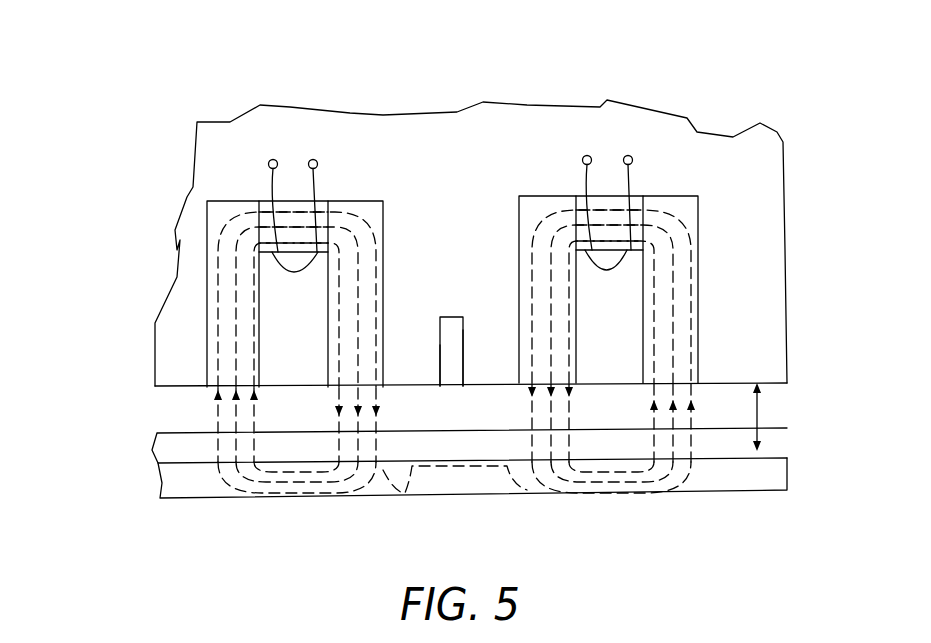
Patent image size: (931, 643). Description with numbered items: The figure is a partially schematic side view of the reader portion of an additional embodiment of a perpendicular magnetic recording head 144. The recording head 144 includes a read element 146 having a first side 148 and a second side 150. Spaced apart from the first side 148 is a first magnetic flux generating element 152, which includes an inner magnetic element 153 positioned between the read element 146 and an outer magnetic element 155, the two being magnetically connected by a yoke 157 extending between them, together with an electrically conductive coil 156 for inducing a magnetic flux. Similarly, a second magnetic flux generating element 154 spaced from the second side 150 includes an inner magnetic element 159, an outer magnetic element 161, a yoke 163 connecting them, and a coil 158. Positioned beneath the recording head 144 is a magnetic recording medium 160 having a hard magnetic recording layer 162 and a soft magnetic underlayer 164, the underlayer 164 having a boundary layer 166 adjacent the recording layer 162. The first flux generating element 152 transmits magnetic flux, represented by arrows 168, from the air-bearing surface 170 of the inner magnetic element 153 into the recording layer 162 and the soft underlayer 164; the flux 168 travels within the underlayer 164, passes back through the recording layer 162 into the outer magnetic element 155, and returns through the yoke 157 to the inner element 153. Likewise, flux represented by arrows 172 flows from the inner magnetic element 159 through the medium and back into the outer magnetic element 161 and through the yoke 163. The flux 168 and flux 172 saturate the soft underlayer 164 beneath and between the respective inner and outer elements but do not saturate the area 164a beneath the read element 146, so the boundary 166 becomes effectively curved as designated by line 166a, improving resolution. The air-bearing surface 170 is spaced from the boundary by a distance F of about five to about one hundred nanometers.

The perpendicular magnetic recording head 144 is at (273, 120).
The read element 146 is at (450, 318).
The first side 148 is at (440, 363).
The second side 150 is at (465, 332).
The first magnetic flux generating element 152 is at (278, 229).
The inner magnetic element 153 is at (377, 233).
The second magnetic flux generating element 154 is at (608, 221).
The outer magnetic element 155 is at (213, 273).
The coil 156 is at (268, 182).
The yoke 157 is at (317, 258).
The coil 158 is at (633, 177).
The inner magnetic element 159 is at (527, 215).
The magnetic recording medium 160 is at (447, 445).
The outer magnetic element 161 is at (687, 232).
The hard magnetic recording layer 162 is at (773, 442).
The yoke 163 is at (633, 253).
The soft magnetic underlayer 164 is at (537, 490).
The area of the soft underlayer 164a is at (468, 480).
The boundary layer 166 is at (501, 502).
The line 166a is at (420, 465).
The arrows representing magnetic flux 168 is at (217, 395).
The air-bearing surface 170 is at (485, 388).
The arrows representing magnetic flux 172 is at (527, 397).
The distance F is at (762, 413).